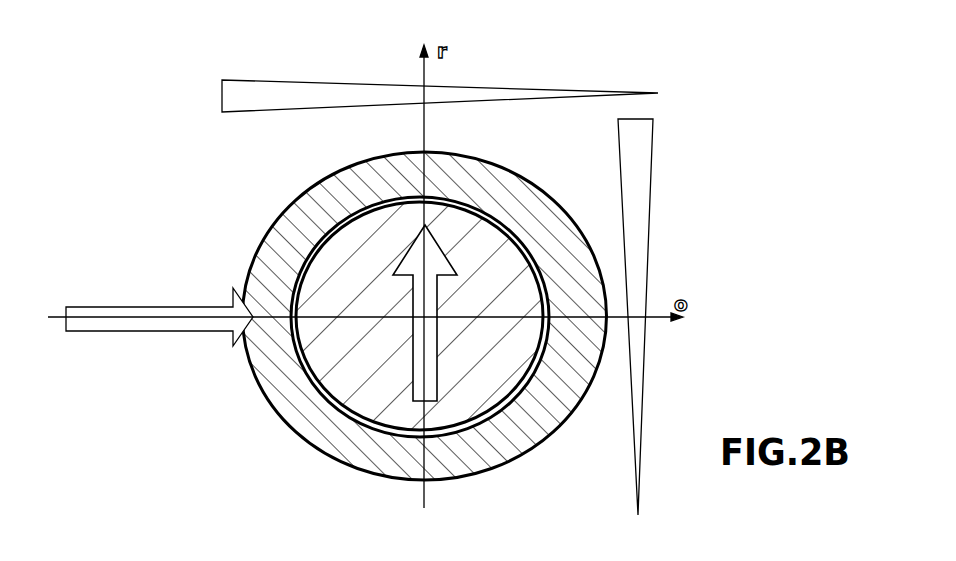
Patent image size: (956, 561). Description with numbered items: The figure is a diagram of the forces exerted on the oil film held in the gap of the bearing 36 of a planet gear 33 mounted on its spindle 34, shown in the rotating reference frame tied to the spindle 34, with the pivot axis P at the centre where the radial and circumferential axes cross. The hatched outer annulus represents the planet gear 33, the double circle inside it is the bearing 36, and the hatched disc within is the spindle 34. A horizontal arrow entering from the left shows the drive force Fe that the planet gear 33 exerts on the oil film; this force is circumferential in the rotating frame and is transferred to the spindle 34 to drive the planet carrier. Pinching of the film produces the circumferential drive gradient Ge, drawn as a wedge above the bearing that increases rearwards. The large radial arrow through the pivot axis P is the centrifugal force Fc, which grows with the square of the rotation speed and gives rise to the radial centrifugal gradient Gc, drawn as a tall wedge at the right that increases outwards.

The planet gear 33 is at (292, 218).
The spindle 34 is at (485, 392).
The bearing 36 is at (548, 212).
The centrifugal force Fc is at (430, 375).
The pivot axis P is at (425, 317).
The drive force Fe is at (130, 308).
The circumferential drive gradient Ge is at (258, 92).
The radial centrifugal gradient Gc is at (637, 171).